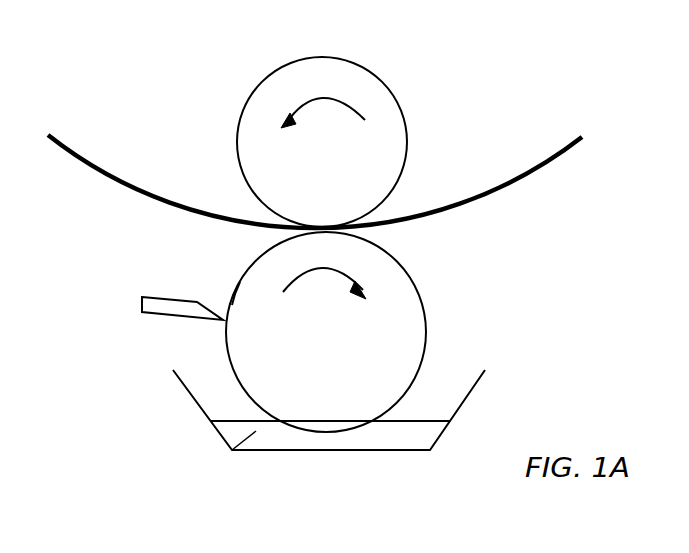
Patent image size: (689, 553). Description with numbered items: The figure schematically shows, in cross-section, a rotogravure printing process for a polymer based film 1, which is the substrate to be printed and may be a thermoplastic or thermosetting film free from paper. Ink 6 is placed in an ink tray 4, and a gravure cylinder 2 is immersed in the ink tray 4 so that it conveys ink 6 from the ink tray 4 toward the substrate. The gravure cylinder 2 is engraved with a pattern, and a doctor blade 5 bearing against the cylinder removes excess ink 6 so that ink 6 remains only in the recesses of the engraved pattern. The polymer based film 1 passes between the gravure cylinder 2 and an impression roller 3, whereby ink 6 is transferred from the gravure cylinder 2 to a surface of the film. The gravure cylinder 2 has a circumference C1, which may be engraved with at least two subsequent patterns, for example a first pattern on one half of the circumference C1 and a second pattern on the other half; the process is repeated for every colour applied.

The polymer based film 1 is at (102, 167).
The gravure cylinder 2 is at (425, 325).
The impression roller 3 is at (400, 105).
The ink tray 4 is at (188, 393).
The doctor blade 5 is at (140, 308).
The ink 6 is at (231, 450).
The circumference C1 is at (235, 290).